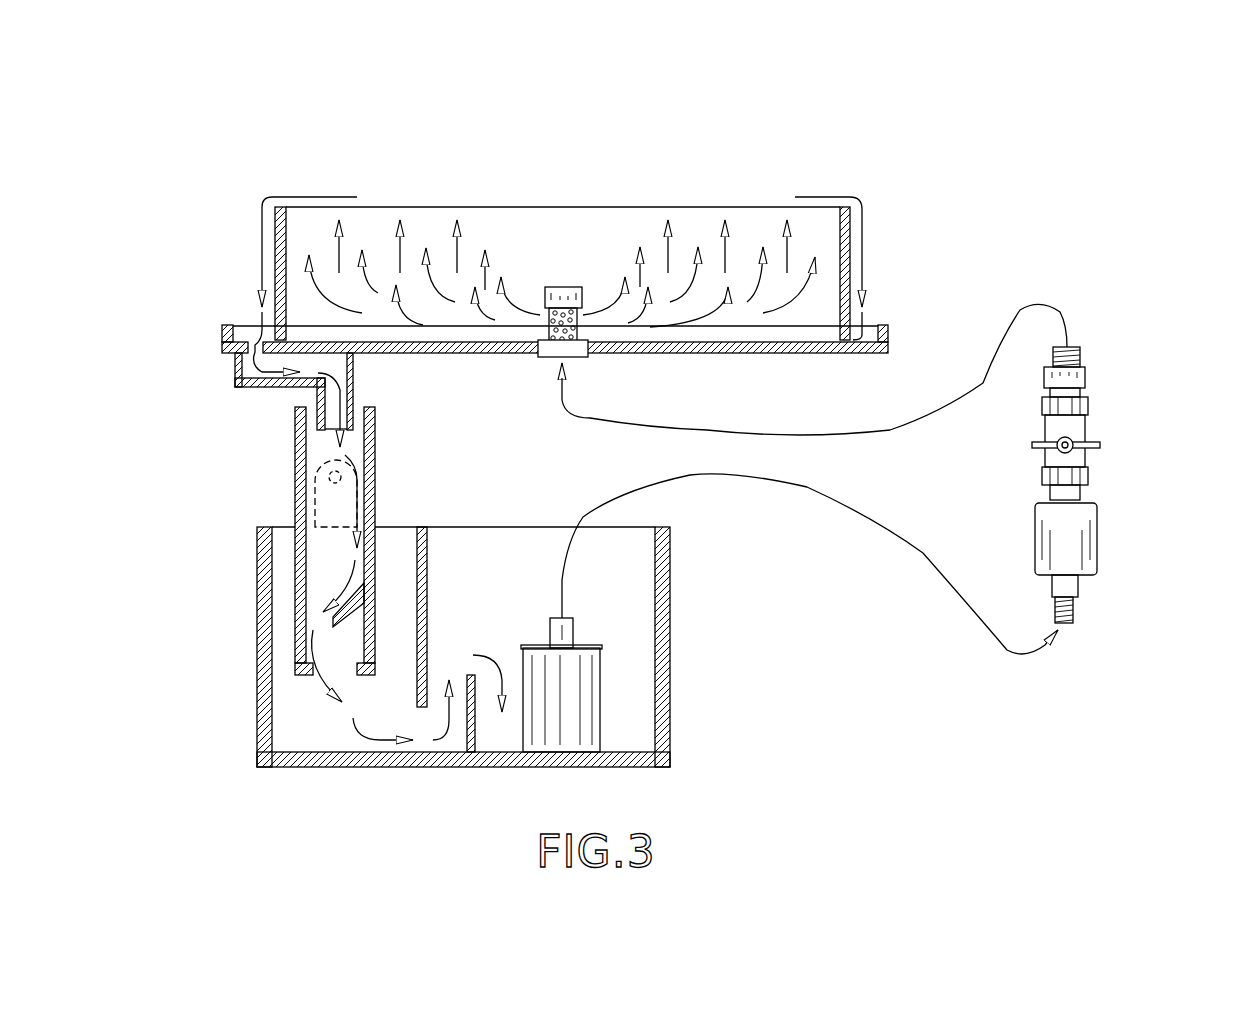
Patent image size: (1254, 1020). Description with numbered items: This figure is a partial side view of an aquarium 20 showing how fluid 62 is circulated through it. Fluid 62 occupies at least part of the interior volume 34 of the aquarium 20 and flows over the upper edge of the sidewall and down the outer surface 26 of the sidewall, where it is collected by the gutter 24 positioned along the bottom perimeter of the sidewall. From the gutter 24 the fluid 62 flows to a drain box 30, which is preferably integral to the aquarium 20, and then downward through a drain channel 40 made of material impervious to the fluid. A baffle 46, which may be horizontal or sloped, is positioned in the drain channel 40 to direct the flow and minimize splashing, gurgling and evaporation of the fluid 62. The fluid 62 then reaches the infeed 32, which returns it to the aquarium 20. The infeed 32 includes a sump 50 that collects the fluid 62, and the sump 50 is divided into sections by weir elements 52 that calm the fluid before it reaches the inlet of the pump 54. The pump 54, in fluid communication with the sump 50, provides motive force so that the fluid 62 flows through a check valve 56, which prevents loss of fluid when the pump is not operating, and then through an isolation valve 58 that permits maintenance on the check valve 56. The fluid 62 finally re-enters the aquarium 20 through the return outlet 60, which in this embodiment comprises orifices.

The aquarium 20 is at (872, 128).
The gutter 24 is at (223, 325).
The outer surface 26 is at (850, 253).
The drain box 30 is at (235, 373).
The infeed 32 is at (1136, 454).
The interior volume 34 is at (521, 256).
The drain channel 40 is at (295, 490).
The baffle 46 is at (335, 604).
The sump 50 is at (257, 707).
The weir element 52 is at (428, 640).
The pump 54 is at (602, 693).
The check valve 56 is at (1100, 540).
The isolation valve 58 is at (1102, 444).
The return outlet 60 is at (563, 287).
The fluid 62 is at (367, 222).